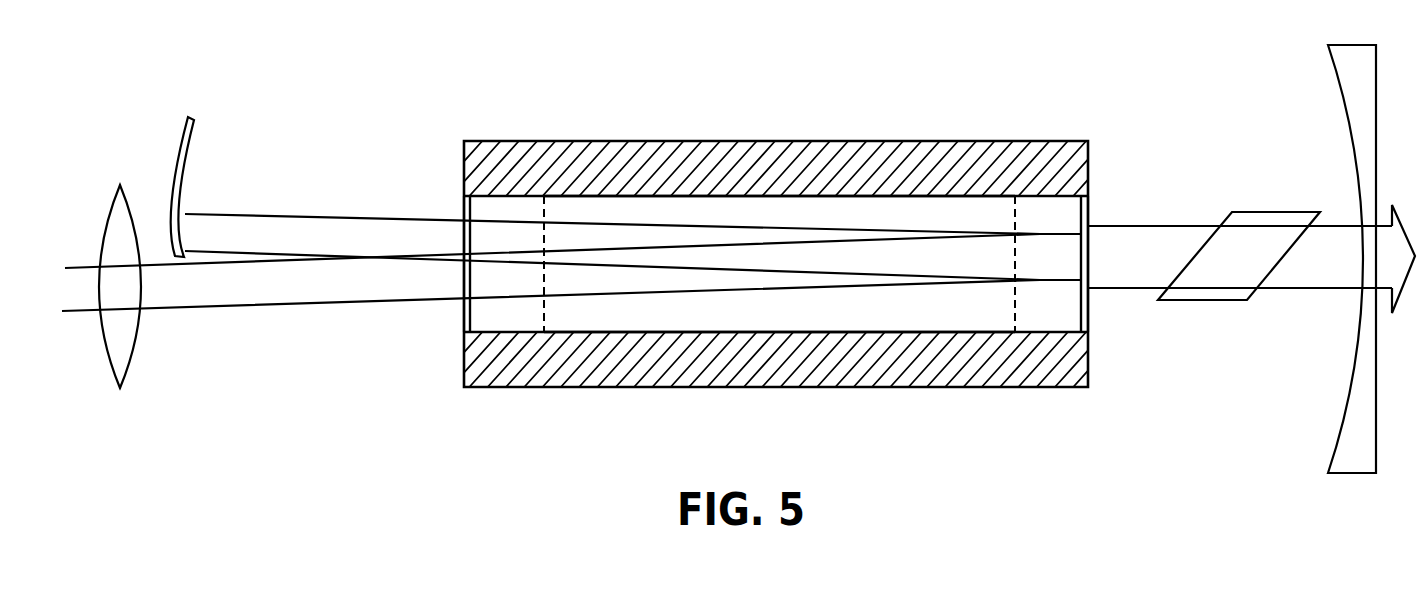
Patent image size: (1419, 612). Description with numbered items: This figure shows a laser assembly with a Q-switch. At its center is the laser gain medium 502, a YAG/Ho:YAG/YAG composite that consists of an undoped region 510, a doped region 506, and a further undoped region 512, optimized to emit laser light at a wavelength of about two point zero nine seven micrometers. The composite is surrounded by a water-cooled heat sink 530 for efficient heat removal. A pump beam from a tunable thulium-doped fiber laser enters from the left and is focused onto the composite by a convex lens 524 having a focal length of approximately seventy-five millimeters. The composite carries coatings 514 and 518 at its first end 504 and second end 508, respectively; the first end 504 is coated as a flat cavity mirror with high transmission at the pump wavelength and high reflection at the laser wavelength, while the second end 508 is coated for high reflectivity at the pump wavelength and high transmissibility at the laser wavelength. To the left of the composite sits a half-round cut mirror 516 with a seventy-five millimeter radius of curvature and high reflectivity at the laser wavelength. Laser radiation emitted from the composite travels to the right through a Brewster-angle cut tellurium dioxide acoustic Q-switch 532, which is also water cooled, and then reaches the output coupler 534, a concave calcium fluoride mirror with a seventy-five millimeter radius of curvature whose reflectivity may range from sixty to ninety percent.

The laser gain medium 502 is at (890, 219).
The first end 504 is at (472, 196).
The doped region 506 is at (749, 324).
The second end 508 is at (1078, 204).
The undoped region 510 is at (488, 326).
The undoped region 512 is at (1037, 321).
The coating 514 is at (470, 216).
The half-round cut mirror 516 is at (181, 115).
The coating 518 is at (1080, 216).
The convex lens 524 is at (128, 193).
The water-cooled heat sink 530 is at (558, 141).
The acoustic Q-switch 532 is at (1205, 302).
The output coupler 534 is at (1346, 475).